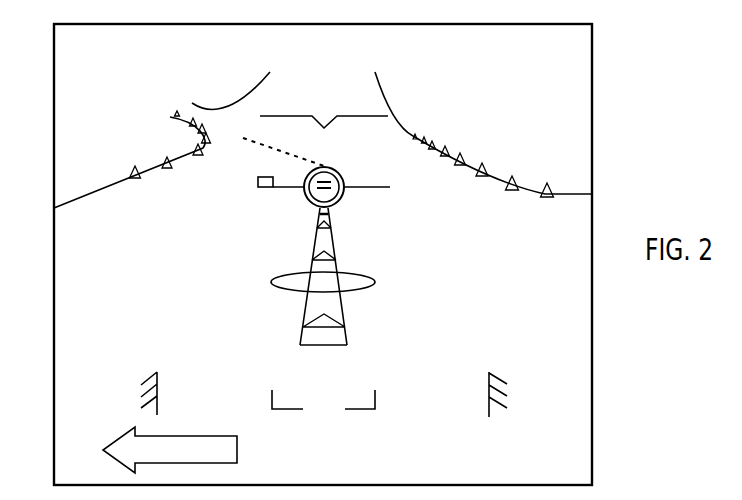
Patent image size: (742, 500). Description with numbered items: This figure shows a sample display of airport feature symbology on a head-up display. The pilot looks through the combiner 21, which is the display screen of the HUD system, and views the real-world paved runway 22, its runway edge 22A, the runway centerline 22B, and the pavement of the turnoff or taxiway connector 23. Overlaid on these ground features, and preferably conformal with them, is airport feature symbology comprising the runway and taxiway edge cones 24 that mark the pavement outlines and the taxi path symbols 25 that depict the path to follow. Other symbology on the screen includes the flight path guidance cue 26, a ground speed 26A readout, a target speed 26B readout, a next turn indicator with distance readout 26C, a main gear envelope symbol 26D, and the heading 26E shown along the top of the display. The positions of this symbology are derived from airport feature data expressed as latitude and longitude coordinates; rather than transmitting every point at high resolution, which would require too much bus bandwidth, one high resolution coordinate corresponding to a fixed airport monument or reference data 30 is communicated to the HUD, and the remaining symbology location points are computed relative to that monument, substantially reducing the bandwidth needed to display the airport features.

The combiner 21 is at (583, 53).
The heading 26E is at (335, 28).
The runway and taxiway edge cones 24 is at (462, 160).
The runway edge 22A is at (153, 176).
The turnoff or taxiway connector 23 is at (233, 139).
The flight path guidance cue 26 is at (337, 167).
The runway centerline 22B is at (347, 305).
The taxi path symbols 25 is at (327, 330).
The ground speed 26A is at (145, 292).
The target speed 26B is at (143, 320).
The next turn indicator with distance readout 26C is at (117, 440).
The main gear envelope symbol 26D is at (360, 410).
The paved runway 22 is at (478, 288).
The airport monument or reference data 30 is at (662, 499).